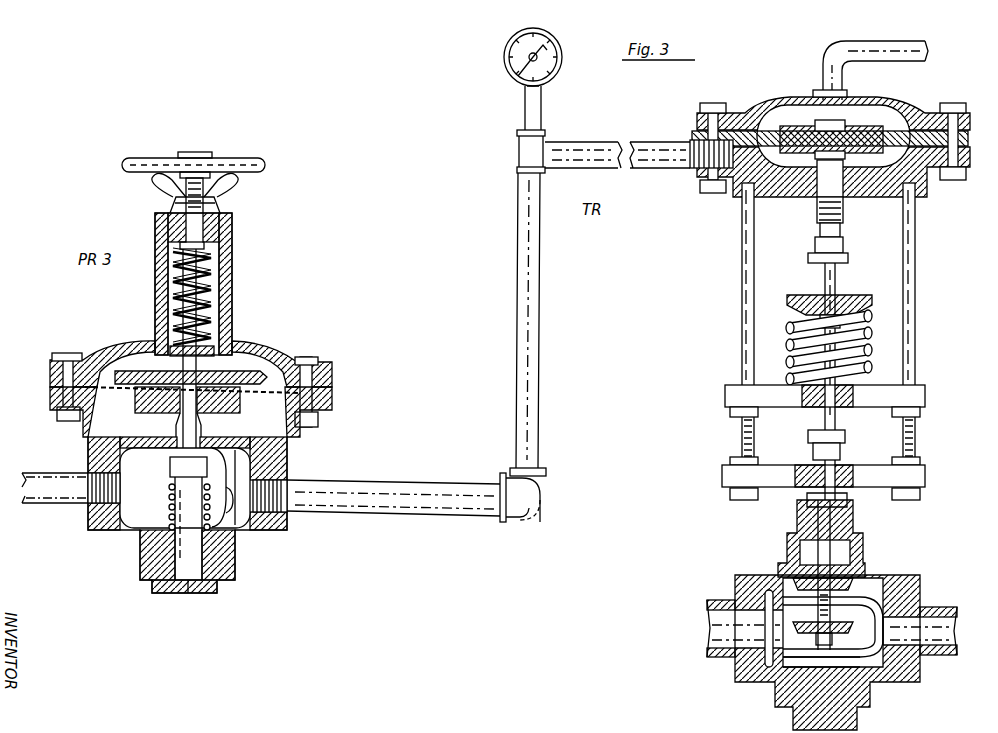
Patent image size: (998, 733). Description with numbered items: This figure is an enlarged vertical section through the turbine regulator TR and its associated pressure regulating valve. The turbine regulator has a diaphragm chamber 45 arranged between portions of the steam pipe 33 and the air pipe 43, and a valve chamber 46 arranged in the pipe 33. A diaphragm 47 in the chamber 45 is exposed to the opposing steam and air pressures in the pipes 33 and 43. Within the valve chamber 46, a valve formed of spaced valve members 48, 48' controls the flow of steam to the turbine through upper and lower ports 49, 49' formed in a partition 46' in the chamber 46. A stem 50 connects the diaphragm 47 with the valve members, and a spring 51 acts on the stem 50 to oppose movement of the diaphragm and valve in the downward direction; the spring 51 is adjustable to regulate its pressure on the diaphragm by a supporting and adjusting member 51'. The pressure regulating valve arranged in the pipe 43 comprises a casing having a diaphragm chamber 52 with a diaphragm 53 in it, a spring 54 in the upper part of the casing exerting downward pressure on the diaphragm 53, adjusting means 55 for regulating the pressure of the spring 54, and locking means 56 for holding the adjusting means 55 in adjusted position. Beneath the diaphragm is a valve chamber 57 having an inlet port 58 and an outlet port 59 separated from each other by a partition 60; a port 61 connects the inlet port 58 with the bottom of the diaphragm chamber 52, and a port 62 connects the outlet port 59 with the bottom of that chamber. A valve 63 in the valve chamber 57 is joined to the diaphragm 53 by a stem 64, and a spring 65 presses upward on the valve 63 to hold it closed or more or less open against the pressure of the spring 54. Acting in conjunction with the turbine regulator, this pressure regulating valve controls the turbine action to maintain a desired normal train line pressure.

The pipe 33 is at (880, 45).
The pipe 43 is at (45, 512).
The diaphragm chamber 45 is at (762, 116).
The valve chamber 46 is at (822, 615).
The partition 46' is at (909, 631).
The diaphragm 47 is at (799, 125).
The valve member 48 is at (848, 567).
The valve member 48' is at (787, 630).
The upper port 49 is at (848, 613).
The lower port 49' is at (797, 686).
The stem 50 is at (824, 272).
The spring 51 is at (819, 340).
The supporting and adjusting member 51' is at (802, 446).
The diaphragm chamber 52 is at (126, 345).
The diaphragm 53 is at (237, 375).
The spring 54 is at (205, 285).
The adjusting means 55 is at (218, 153).
The locking means 56 is at (236, 196).
The valve chamber 57 is at (138, 510).
The inlet port 58 is at (96, 469).
The outlet port 59 is at (262, 514).
The partition 60 is at (236, 510).
The port 61 is at (262, 446).
The port 62 is at (245, 470).
The valve 63 is at (190, 583).
The stem 64 is at (186, 437).
The spring 65 is at (168, 485).